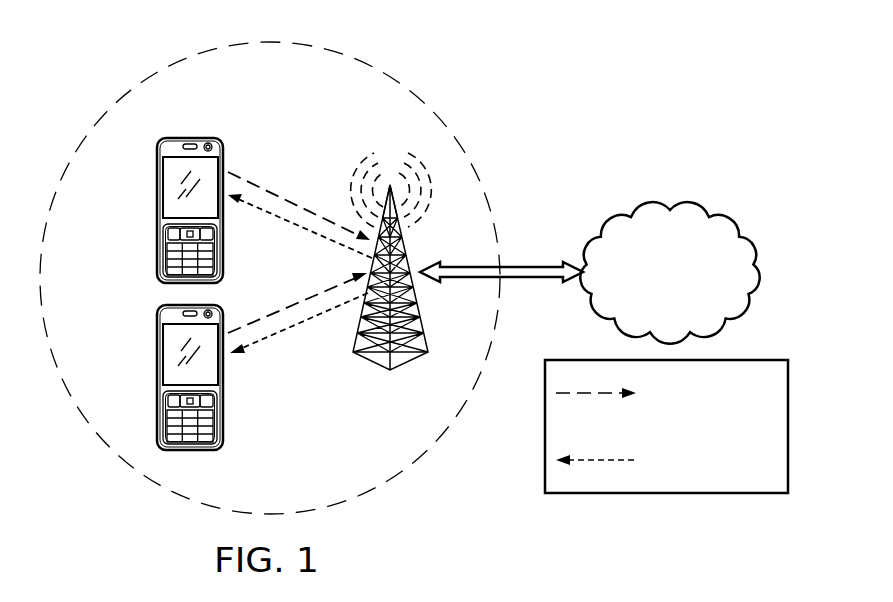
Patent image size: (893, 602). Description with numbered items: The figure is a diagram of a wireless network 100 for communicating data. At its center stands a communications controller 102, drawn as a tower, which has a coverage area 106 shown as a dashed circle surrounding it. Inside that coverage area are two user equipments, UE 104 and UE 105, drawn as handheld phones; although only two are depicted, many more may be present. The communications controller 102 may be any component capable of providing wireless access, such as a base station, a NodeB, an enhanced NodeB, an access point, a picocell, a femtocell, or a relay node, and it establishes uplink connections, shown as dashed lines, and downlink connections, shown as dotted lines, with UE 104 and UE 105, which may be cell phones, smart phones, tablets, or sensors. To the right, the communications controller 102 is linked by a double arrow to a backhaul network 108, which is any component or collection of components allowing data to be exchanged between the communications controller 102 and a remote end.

The network 100 is at (553, 123).
The communications controller 102 is at (410, 362).
The UE 104 is at (157, 210).
The UE 105 is at (157, 378).
The coverage area 106 is at (156, 70).
The backhaul network 108 is at (667, 203).